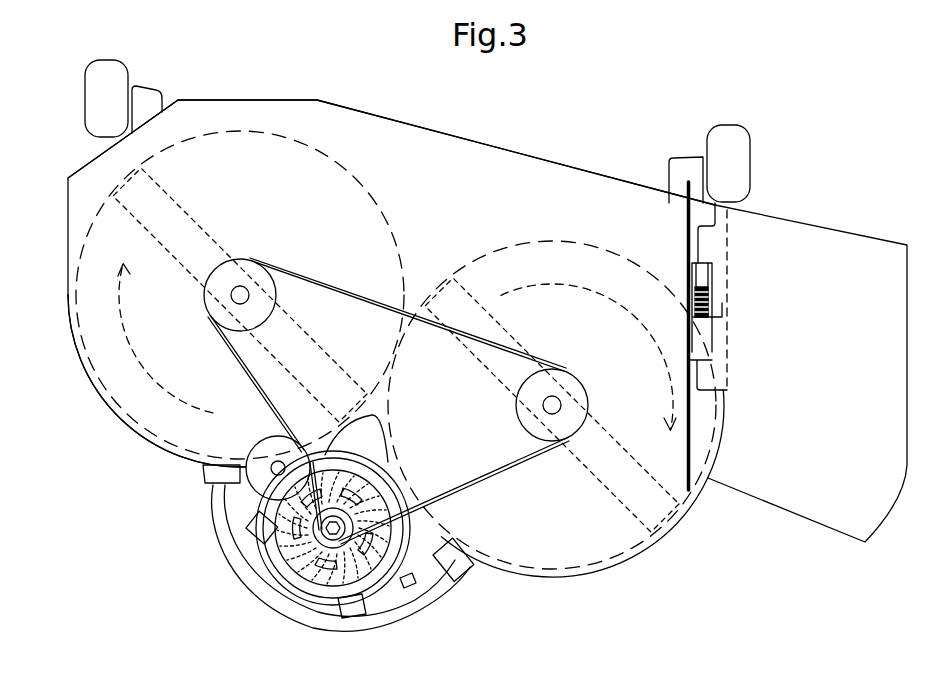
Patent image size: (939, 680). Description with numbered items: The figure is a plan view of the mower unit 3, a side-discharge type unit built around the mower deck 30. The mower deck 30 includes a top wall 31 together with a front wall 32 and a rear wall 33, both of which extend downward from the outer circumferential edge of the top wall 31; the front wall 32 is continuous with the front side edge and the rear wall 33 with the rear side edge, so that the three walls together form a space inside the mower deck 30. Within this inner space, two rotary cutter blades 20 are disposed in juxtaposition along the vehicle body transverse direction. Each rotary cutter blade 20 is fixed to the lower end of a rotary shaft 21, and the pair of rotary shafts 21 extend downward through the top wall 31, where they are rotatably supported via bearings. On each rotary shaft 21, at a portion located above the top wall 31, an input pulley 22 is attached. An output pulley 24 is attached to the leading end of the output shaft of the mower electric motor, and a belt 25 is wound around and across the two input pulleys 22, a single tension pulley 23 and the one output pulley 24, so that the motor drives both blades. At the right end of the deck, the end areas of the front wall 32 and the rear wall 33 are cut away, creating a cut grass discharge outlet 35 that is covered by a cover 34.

The mower unit 3 is at (518, 146).
The rotary cutter blade 20 is at (160, 189).
The rotary shaft 21 is at (248, 295).
The input pulley 22 is at (257, 262).
The tension pulley 23 is at (265, 445).
The output pulley 24 is at (365, 530).
The belt 25 is at (372, 288).
The mower deck 30 is at (402, 158).
The top wall 31 is at (461, 178).
The front wall 32 is at (595, 178).
The rear wall 33 is at (177, 458).
The cover 34 is at (812, 250).
The cut grass discharge outlet 35 is at (718, 289).